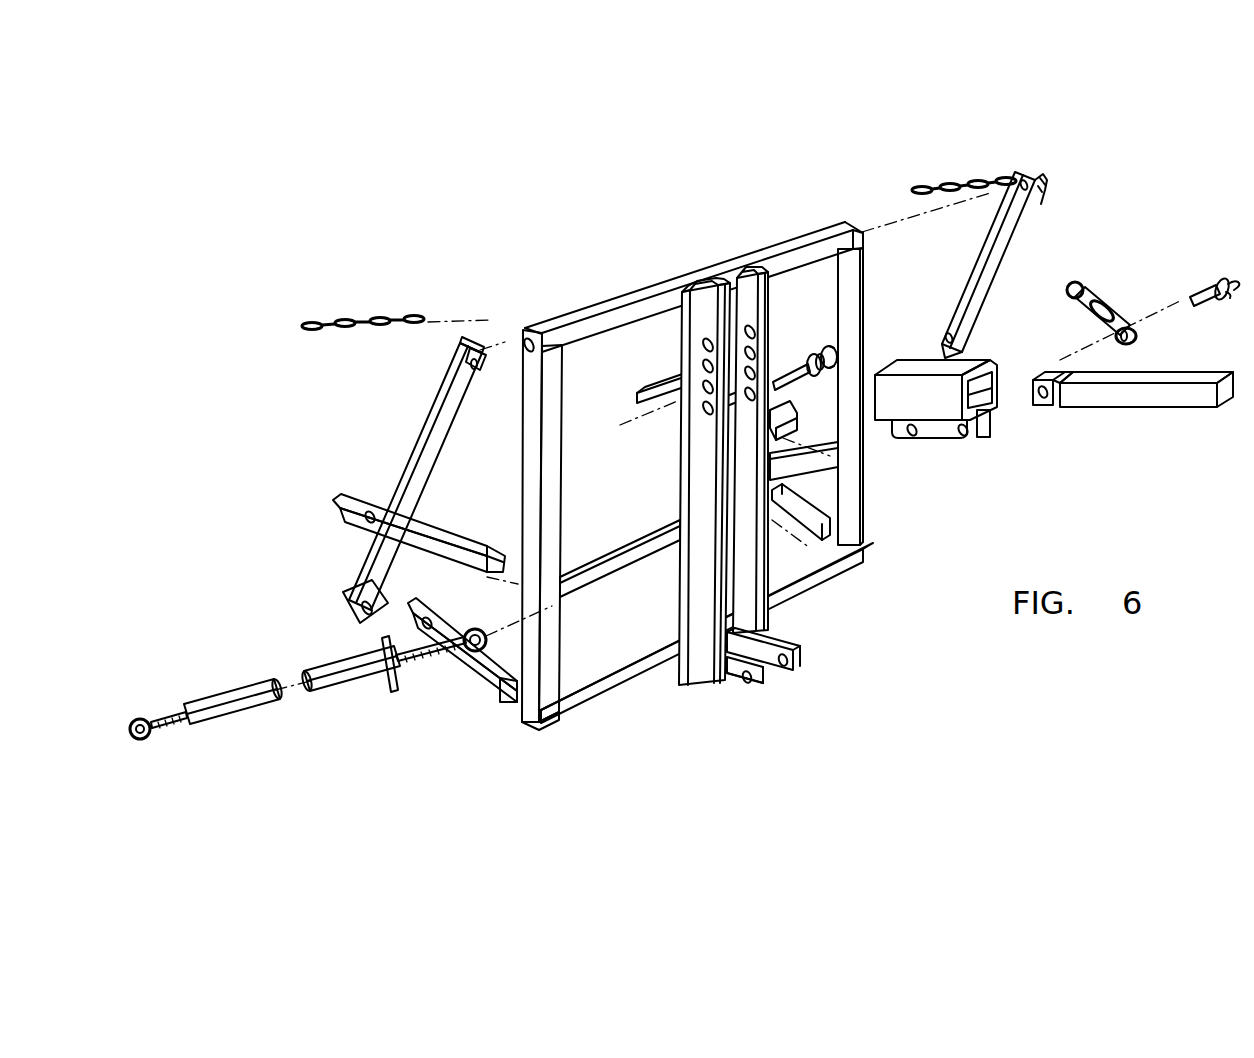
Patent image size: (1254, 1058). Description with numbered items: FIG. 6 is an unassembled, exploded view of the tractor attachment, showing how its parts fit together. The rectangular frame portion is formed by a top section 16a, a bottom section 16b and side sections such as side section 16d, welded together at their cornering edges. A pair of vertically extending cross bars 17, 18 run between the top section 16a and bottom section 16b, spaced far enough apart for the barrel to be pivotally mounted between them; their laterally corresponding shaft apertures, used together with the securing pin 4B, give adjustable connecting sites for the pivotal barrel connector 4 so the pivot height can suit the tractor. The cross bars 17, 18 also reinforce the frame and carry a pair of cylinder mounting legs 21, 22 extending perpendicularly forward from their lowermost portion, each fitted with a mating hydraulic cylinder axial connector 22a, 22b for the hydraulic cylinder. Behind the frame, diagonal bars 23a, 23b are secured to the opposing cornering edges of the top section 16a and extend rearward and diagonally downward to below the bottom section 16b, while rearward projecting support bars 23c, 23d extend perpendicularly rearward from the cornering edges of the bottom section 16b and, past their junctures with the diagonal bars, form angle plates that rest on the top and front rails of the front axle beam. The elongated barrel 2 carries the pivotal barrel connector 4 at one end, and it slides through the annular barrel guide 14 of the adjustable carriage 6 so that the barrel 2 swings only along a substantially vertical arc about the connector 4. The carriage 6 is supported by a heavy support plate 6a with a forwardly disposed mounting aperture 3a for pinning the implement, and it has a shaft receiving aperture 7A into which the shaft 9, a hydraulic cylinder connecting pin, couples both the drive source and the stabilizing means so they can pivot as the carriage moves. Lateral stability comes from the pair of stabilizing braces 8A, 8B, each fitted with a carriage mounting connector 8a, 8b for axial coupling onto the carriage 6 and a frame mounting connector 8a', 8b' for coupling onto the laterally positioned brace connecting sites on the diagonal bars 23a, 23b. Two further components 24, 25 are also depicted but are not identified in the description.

The elongated barrel 2 is at (1165, 400).
The mounting aperture 3a is at (960, 438).
The pivotal barrel connector 4 is at (1040, 406).
The securing pin 4B is at (803, 365).
The adjustable carriage 6 is at (986, 422).
The support plate 6a is at (933, 440).
The shaft receiving aperture 7A is at (905, 440).
The stabilizing brace 8A is at (1108, 306).
The carriage mounting connector 8a is at (1142, 346).
The frame mounting connector 8a' is at (1046, 294).
The stabilizing brace 8B is at (248, 690).
The carriage mounting connector 8b is at (154, 755).
The frame mounting connector 8b' is at (462, 643).
The shaft 9 is at (1213, 276).
The barrel guide 14 is at (951, 369).
The top section 16a is at (650, 290).
The bottom section 16b is at (655, 526).
The side section 16d is at (528, 490).
The cross bar 17 is at (770, 334).
The cross bar 18 is at (681, 600).
The cylinder mounting leg 21 is at (778, 646).
The cylinder mounting leg 22 is at (737, 685).
The hydraulic cylinder axial connector 22a is at (748, 688).
The hydraulic cylinder axial connector 22b is at (790, 672).
The diagonal bar 23a is at (970, 290).
The diagonal bar 23b is at (436, 418).
The rearward projecting support bar 23c is at (646, 396).
The rearward projecting support bar 23d is at (346, 512).
The chain 24 is at (952, 186).
The chain 25 is at (346, 322).